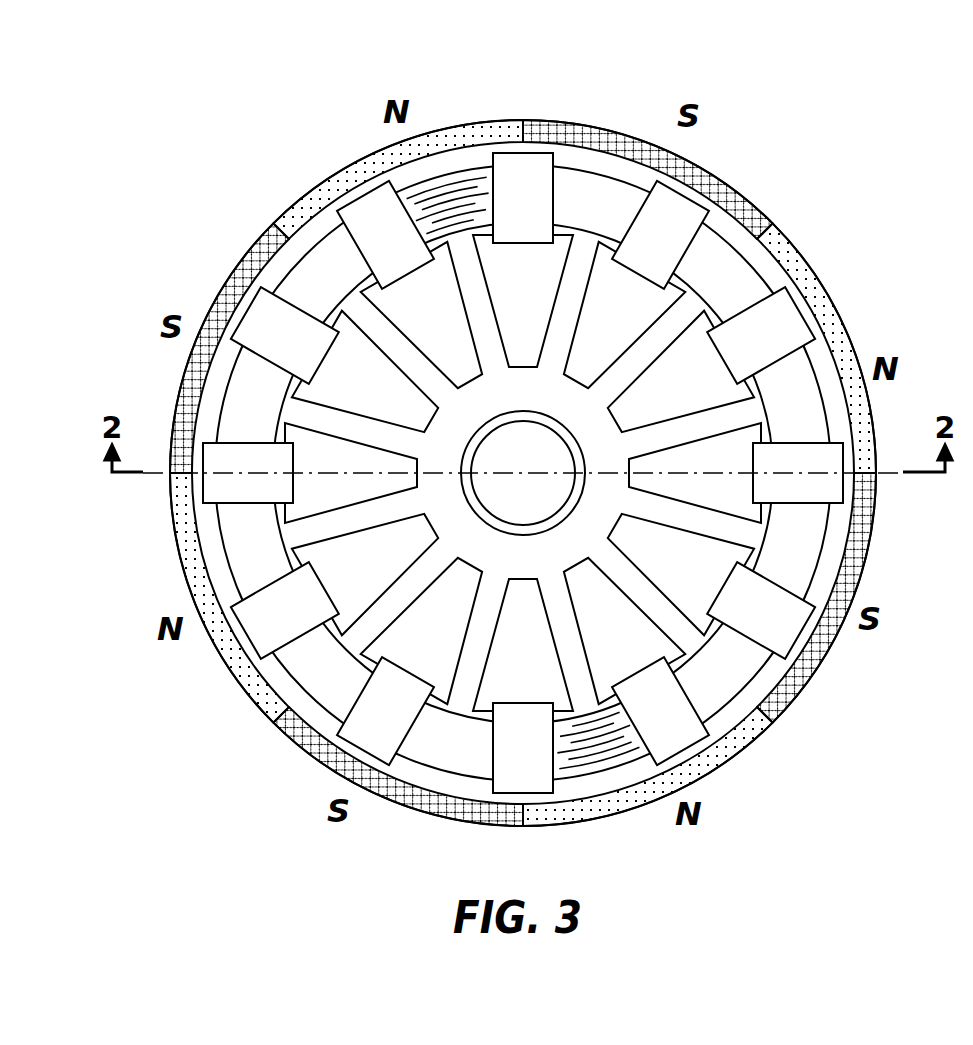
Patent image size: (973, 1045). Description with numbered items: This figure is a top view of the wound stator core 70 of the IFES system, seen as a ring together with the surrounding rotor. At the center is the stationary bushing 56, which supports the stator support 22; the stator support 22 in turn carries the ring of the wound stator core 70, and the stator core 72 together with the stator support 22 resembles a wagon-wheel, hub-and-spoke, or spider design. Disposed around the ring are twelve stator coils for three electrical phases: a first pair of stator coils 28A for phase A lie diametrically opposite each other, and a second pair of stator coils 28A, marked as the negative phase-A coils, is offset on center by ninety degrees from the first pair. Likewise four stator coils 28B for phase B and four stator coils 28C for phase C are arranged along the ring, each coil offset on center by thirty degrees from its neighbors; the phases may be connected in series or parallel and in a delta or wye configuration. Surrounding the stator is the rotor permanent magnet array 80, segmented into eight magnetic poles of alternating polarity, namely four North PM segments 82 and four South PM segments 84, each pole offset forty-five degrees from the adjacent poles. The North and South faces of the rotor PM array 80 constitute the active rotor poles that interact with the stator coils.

The wound stator core 70 is at (273, 90).
The stator core 72 is at (463, 183).
The stator support 22 is at (658, 340).
The stationary bushing 56 is at (462, 452).
The rotor permanent magnet array 80 is at (805, 260).
The North PM segments 82 is at (842, 360).
The South PM segments 84 is at (857, 556).
The stator coils for power phase A 28A is at (538, 165).
The stator coils for power phase B 28B is at (688, 212).
The stator coils for power phase C 28C is at (795, 327).